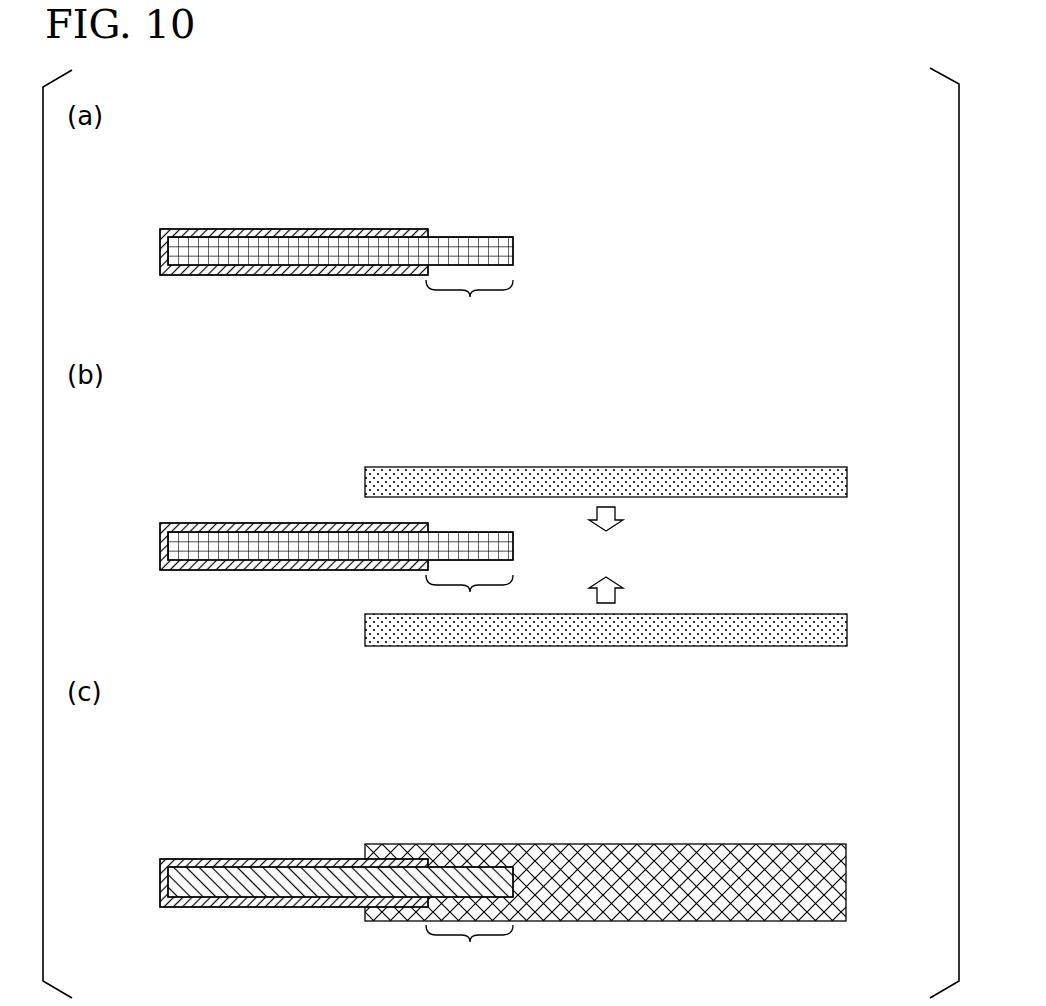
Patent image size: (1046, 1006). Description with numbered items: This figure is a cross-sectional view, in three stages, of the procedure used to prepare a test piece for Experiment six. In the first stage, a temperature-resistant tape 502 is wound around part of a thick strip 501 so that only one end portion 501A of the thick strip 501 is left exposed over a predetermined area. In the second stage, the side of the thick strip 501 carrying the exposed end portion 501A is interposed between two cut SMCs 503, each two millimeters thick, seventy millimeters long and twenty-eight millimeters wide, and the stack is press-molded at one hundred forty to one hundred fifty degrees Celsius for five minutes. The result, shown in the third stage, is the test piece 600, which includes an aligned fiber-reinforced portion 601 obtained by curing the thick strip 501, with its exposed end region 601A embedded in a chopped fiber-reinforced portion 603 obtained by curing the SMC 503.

The thick strip 501 is at (475, 243).
The end portion 501A is at (361, 593).
The temperature-resistant tape 502 is at (293, 228).
The SMC 503 is at (829, 483).
The test piece 600 is at (543, 565).
The aligned fiber-reinforced portion 601 is at (472, 877).
The end portion of aligned fiber-reinforced portion 601A is at (469, 955).
The chopped fiber-reinforced portion 603 is at (645, 882).